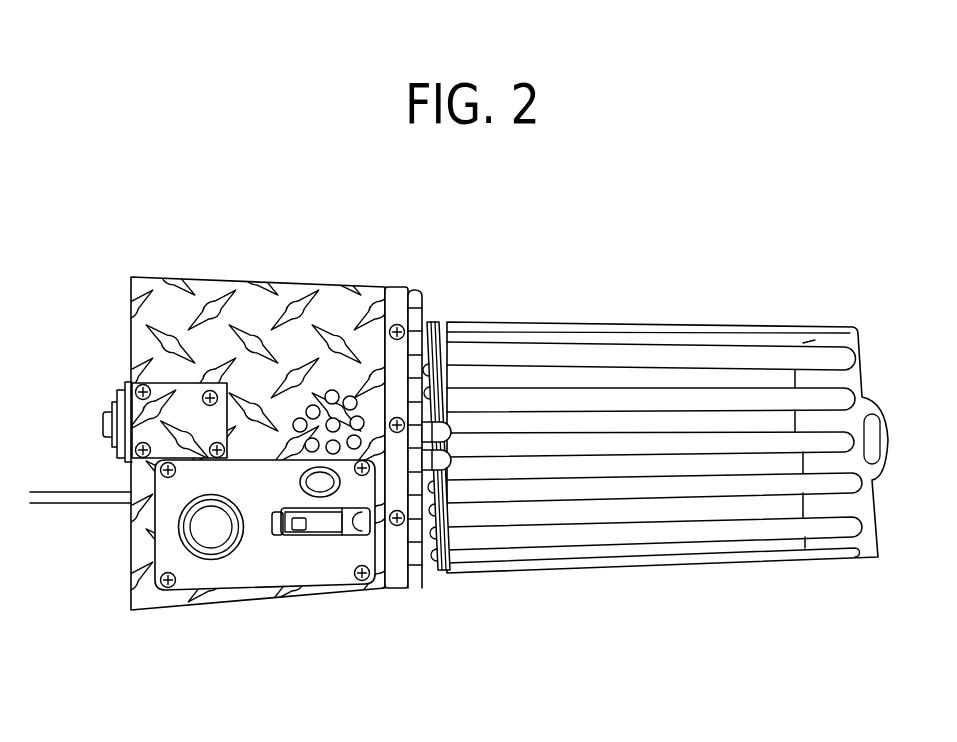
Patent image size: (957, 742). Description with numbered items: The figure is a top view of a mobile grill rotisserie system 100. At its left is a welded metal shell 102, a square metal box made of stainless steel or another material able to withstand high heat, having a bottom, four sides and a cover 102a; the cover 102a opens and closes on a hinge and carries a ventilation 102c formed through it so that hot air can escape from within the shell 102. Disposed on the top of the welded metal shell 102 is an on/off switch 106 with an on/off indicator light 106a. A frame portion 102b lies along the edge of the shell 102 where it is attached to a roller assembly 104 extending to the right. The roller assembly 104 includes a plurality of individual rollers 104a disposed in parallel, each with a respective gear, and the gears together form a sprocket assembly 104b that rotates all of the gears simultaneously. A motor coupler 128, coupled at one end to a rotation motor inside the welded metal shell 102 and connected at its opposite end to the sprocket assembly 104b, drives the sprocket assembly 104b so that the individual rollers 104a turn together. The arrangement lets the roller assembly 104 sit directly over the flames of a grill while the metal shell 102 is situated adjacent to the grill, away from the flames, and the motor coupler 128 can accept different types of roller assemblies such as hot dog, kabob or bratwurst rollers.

The mobile grill rotisserie system 100 is at (175, 203).
The welded metal shell 102 is at (137, 328).
The cover 102a is at (253, 382).
The mounting frame 102b is at (411, 293).
The ventilation 102c is at (300, 422).
The roller assembly 104 is at (648, 330).
The individual rollers 104a is at (783, 440).
The sprocket assembly 104b is at (437, 333).
The on/off switch 106 is at (297, 527).
The on/off indicator light 106a is at (210, 530).
The motor coupler 128 is at (442, 473).